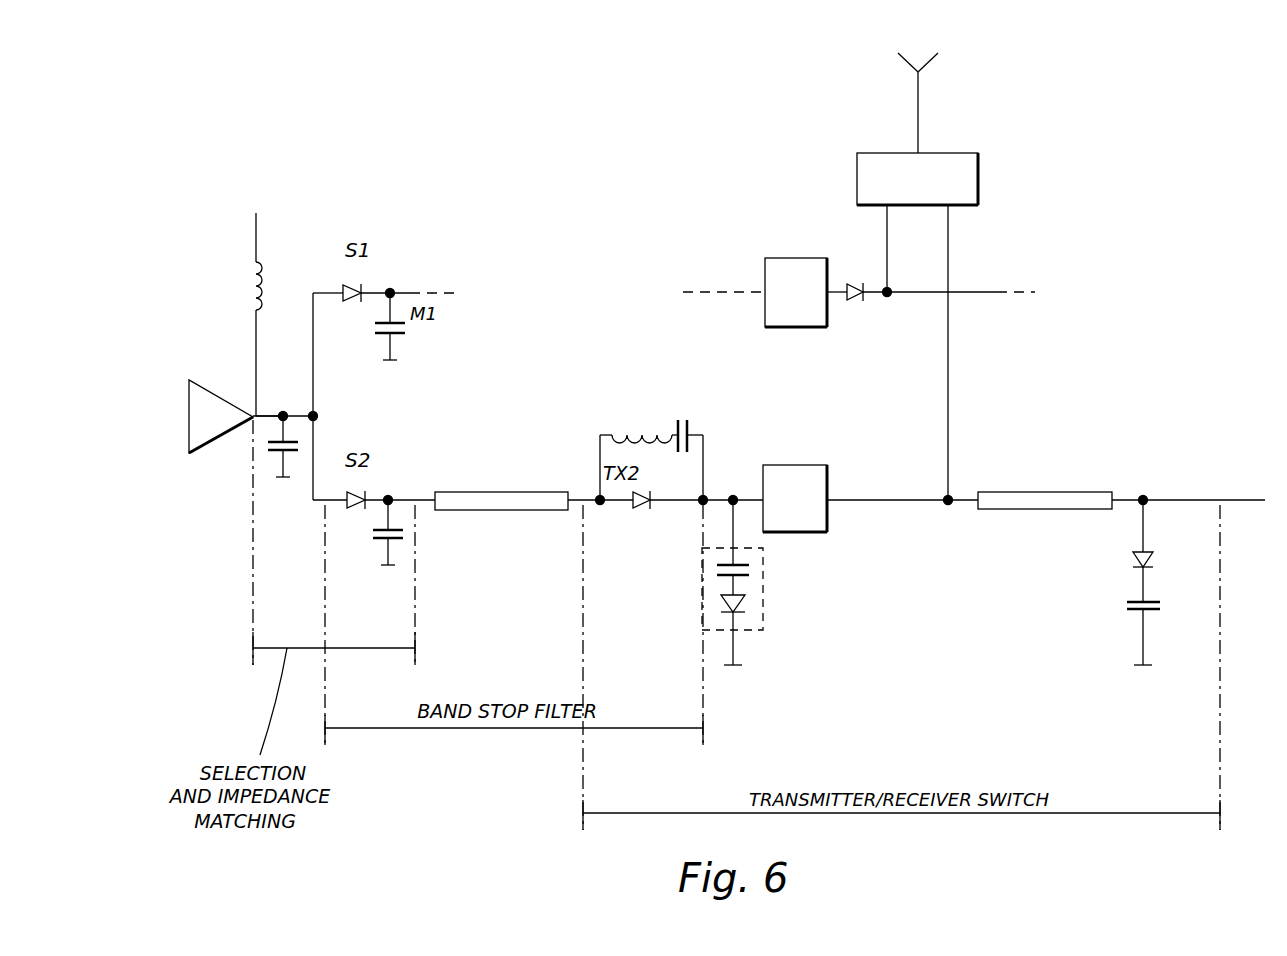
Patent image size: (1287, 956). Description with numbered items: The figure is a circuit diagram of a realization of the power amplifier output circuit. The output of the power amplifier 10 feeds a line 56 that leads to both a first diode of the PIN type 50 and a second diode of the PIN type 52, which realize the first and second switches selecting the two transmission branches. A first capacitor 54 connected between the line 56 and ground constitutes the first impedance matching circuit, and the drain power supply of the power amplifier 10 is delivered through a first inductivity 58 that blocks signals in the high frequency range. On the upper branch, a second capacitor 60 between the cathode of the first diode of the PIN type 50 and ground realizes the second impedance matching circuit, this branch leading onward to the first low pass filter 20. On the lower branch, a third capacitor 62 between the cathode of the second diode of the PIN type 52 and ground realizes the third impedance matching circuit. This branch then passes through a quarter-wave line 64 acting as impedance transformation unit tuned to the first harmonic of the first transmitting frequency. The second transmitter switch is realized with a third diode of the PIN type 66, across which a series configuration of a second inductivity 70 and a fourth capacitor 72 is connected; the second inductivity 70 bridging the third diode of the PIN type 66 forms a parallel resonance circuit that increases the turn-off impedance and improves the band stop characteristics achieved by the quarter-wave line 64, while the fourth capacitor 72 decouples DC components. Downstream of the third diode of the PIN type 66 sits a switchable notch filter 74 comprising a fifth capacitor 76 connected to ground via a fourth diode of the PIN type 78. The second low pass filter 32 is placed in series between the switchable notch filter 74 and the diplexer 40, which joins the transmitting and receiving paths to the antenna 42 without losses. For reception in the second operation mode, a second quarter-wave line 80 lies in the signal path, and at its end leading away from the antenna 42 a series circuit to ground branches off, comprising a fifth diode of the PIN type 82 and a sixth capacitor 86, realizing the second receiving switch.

The power amplifier 10 is at (219, 446).
The first low pass filter 20 is at (795, 255).
The second low pass filter 32 is at (795, 462).
The diplexer 40 is at (985, 176).
The antenna 42 is at (927, 63).
The first diode of the PIN type 50 is at (351, 303).
The second diode of the PIN type 52 is at (354, 509).
The first capacitor 54 is at (273, 447).
The line 56 is at (272, 410).
The first inductivity 58 is at (246, 292).
The second capacitor 60 is at (398, 332).
The third capacitor 62 is at (405, 535).
The λ/4 line 64 is at (525, 490).
The third diode of the PIN type 66 is at (640, 508).
The second inductivity 70 is at (641, 430).
The fourth capacitor 72 is at (692, 425).
The switchable notch filter 74 is at (765, 588).
The fifth capacitor 76 is at (718, 567).
The fourth diode of the PIN type 78 is at (722, 604).
The second λ/4 line 80 is at (1068, 490).
The fifth diode of the PIN type 82 is at (1135, 557).
The sixth capacitor 86 is at (1132, 602).